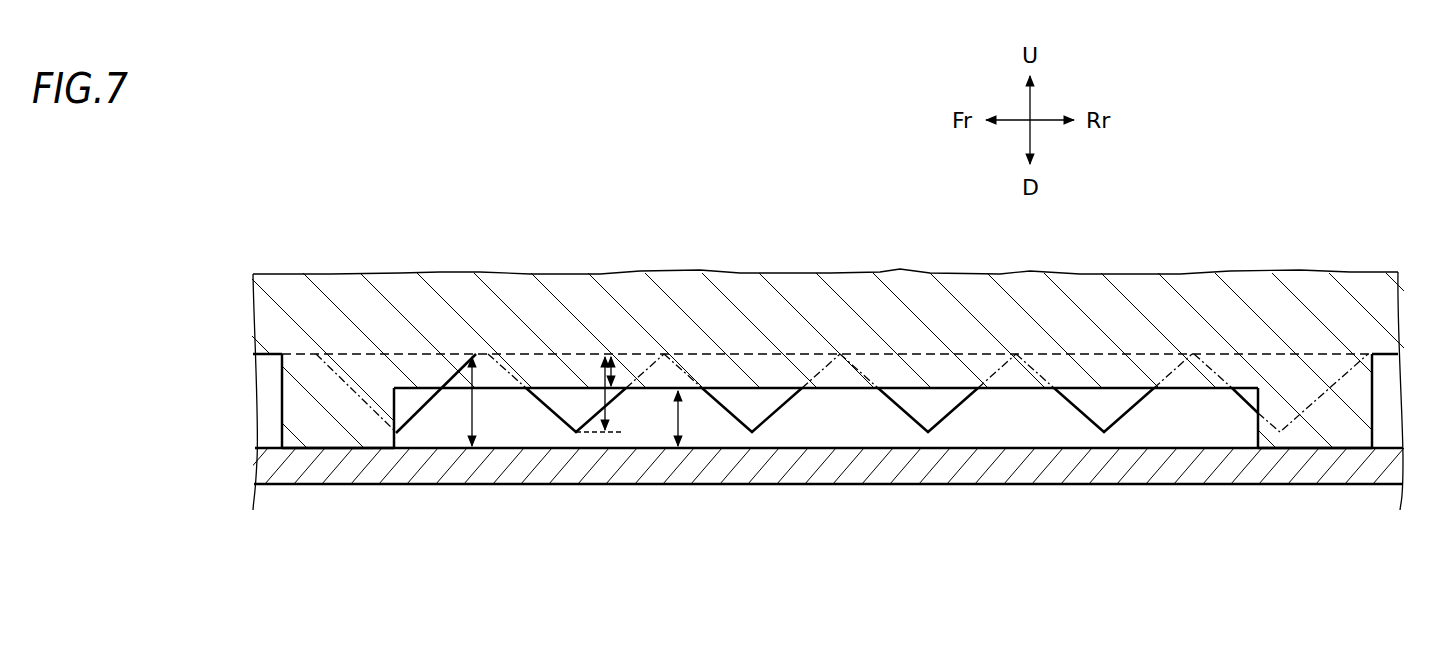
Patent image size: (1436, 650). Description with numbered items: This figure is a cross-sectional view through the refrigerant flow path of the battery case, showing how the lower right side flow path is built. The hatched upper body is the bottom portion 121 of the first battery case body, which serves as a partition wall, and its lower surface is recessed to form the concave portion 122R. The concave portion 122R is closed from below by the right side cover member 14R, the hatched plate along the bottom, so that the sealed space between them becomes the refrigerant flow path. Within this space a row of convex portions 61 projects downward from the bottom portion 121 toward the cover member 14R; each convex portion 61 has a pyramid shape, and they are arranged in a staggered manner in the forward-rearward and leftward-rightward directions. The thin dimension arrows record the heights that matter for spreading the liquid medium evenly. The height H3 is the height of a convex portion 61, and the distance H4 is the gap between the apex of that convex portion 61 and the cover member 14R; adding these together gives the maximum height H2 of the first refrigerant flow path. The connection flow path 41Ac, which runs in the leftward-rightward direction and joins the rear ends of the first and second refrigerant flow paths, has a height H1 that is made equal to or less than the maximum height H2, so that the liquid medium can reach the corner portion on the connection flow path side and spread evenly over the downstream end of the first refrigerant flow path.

The bottom portion 121 is at (686, 292).
The concave portion 122R is at (1258, 423).
The connection flow path 41Ac is at (1020, 403).
The convex portion 61 is at (556, 404).
The right side cover member 14R is at (876, 463).
The height of the connection flow path H1 is at (683, 418).
The maximum height of the first refrigerant flow path H2 is at (478, 400).
The height of the convex portion H3 is at (618, 389).
The distance between the apex of the convex portion and the cover member H4 is at (607, 433).